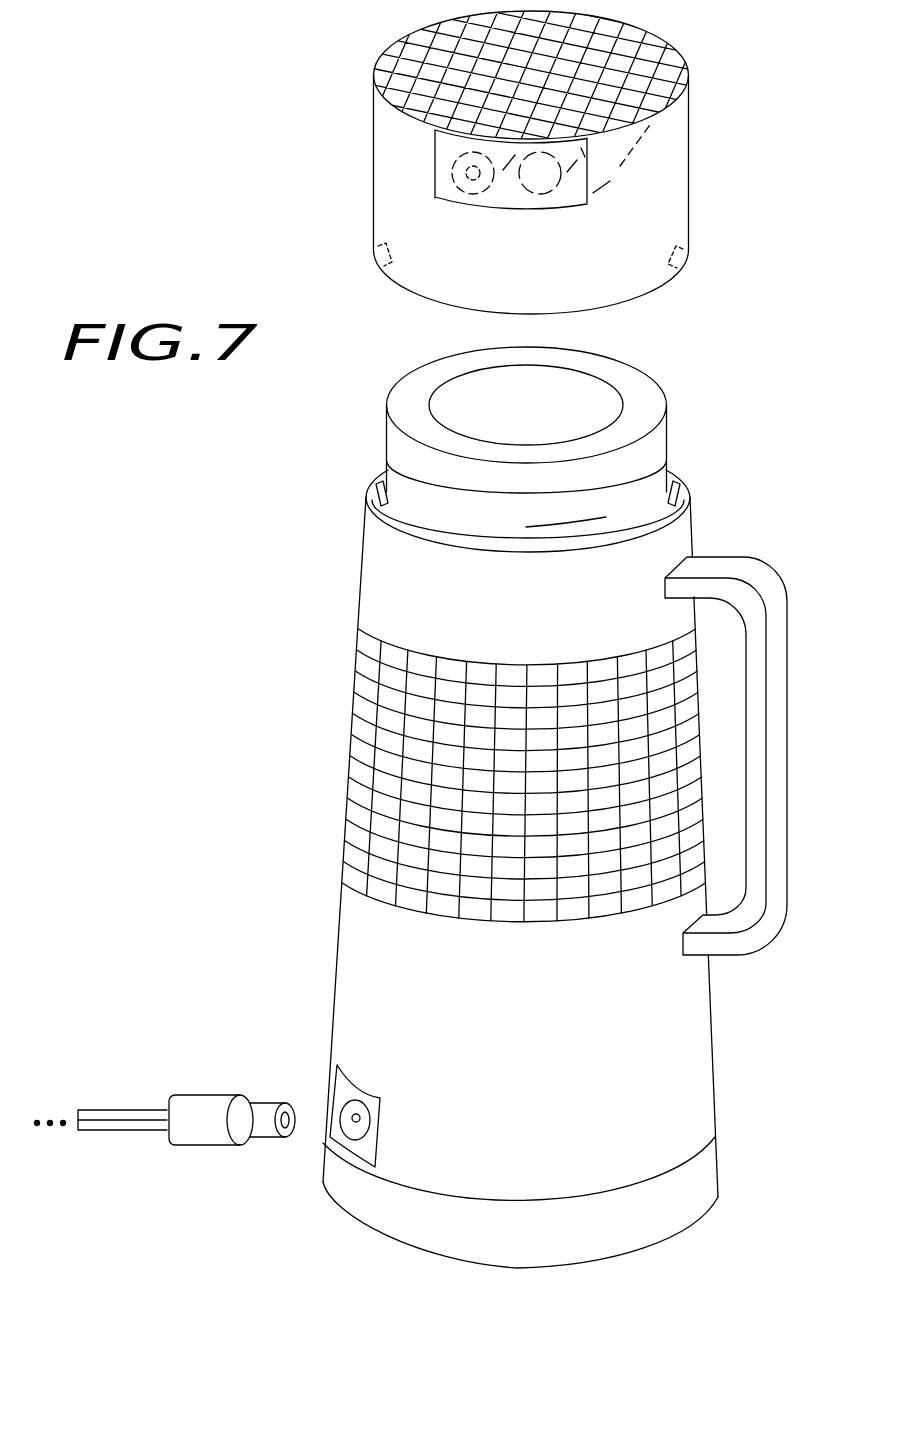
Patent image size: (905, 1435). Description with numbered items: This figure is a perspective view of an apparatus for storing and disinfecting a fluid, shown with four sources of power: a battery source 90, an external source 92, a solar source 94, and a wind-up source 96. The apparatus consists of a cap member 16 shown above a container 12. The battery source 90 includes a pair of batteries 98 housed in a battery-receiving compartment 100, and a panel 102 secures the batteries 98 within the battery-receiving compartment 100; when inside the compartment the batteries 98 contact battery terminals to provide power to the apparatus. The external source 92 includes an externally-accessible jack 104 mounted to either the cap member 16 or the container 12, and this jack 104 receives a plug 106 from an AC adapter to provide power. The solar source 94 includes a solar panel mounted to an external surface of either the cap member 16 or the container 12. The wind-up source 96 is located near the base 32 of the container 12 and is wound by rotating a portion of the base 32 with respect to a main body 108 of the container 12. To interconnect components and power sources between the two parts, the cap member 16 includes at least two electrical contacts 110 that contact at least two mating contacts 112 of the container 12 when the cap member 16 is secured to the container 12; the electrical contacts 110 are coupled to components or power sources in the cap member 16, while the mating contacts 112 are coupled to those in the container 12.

The container 12 is at (690, 522).
The cap member 16 is at (689, 218).
The base 32 is at (718, 1163).
The battery source 90 is at (652, 136).
The external source 92 is at (312, 1078).
The solar source 94 is at (626, 30).
The wind-up source 96 is at (726, 1120).
The batteries 98 is at (453, 160).
The battery-receiving compartment 100 is at (592, 167).
The panel 102 is at (435, 183).
The externally-accessible jack 104 is at (358, 1102).
The plug 106 is at (247, 1145).
The main body 108 is at (717, 1080).
The electrical contacts 110 is at (378, 261).
The mating contacts 112 is at (378, 482).